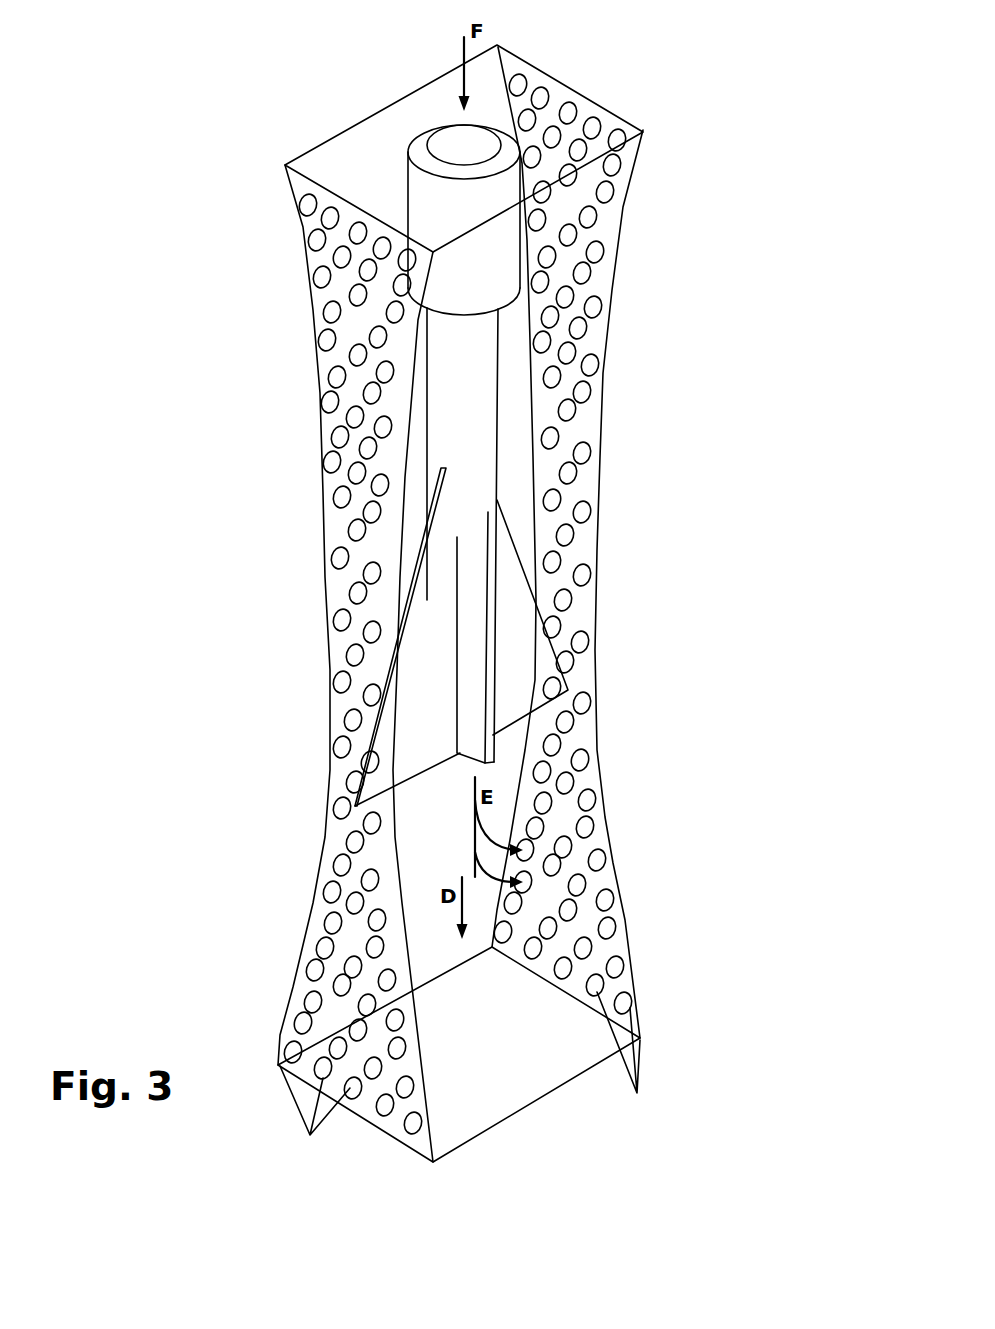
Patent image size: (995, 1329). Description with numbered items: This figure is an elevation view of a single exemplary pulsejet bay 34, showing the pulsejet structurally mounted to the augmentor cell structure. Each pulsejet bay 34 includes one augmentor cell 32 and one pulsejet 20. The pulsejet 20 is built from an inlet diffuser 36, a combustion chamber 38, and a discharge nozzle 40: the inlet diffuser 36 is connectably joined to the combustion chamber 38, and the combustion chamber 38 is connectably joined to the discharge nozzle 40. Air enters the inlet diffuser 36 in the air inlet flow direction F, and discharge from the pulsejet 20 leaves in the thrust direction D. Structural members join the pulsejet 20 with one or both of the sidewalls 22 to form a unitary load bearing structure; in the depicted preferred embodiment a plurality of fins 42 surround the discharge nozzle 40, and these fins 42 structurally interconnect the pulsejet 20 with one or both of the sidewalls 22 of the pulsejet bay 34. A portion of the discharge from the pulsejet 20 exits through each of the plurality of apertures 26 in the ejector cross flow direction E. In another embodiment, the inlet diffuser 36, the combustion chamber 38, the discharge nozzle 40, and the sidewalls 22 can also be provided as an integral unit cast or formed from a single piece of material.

The pulsejet 20 is at (461, 562).
The sidewalls 22 is at (392, 122).
The apertures 26 is at (470, 1078).
The augmentor cell 32 is at (598, 540).
The pulsejet bay 34 is at (502, 605).
The inlet diffuser 36 is at (423, 203).
The combustion chamber 38 is at (468, 433).
The discharge nozzle 40 is at (492, 763).
The fins 42 is at (418, 670).